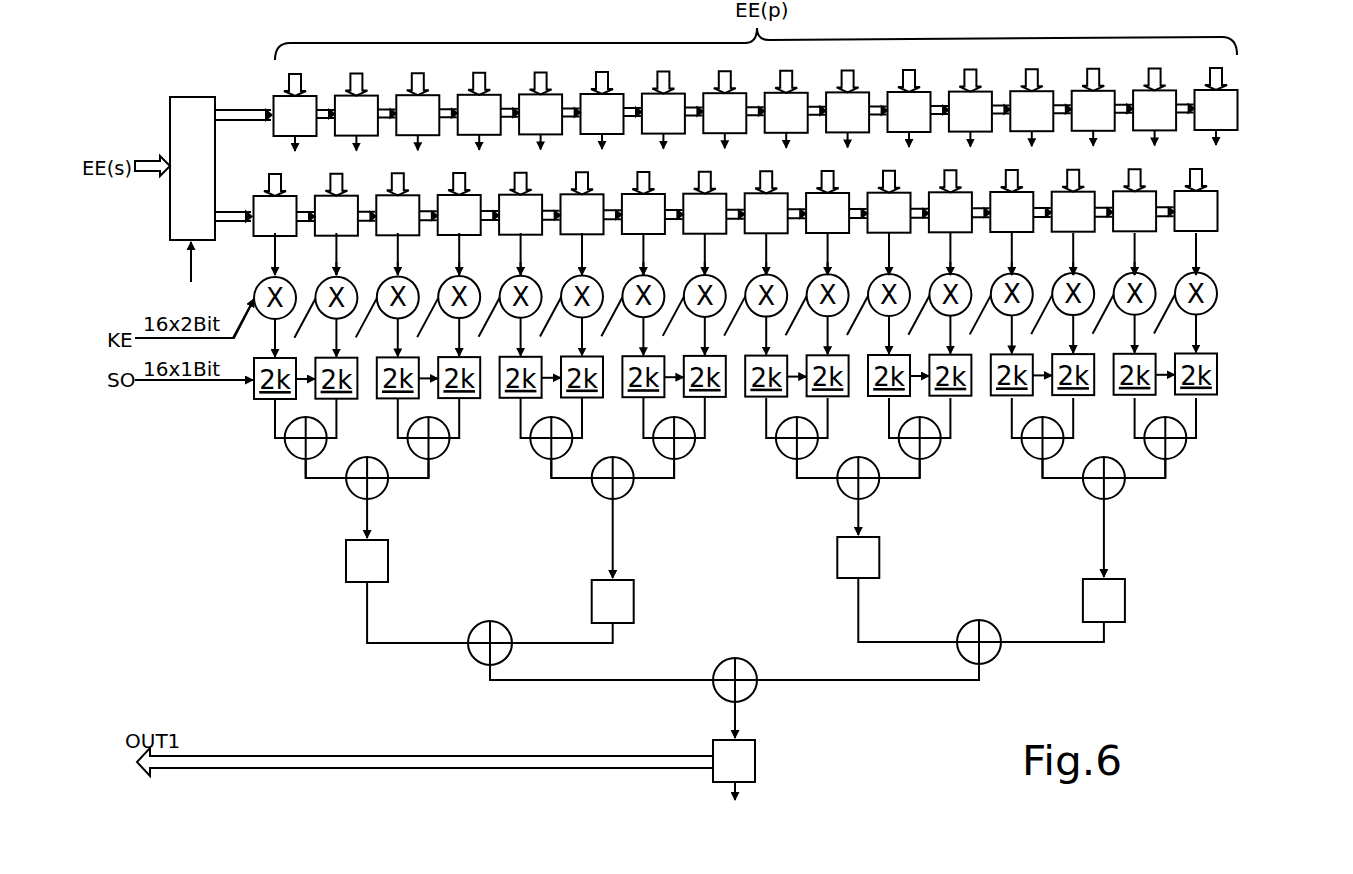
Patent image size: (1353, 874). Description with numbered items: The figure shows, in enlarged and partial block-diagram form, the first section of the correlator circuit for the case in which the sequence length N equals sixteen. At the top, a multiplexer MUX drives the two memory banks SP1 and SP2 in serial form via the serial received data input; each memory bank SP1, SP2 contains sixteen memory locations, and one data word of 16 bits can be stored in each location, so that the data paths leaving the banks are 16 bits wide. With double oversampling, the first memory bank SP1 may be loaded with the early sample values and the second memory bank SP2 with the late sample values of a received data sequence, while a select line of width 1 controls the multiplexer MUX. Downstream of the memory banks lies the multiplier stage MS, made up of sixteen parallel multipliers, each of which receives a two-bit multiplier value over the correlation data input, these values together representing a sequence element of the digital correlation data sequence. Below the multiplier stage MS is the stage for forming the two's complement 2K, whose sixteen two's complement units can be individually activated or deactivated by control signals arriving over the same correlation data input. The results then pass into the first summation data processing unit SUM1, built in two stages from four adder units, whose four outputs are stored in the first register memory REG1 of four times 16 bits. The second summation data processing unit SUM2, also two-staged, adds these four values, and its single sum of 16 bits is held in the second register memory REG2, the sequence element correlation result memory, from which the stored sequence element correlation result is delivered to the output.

The 16-bit data bus 16 is at (667, 470).
The 1-bit multiplexer select line 1 is at (183, 262).
The multiplexer MUX is at (212, 177).
The first memory bank SP1 is at (1244, 70).
The second memory bank SP2 is at (1244, 168).
The multiplier stage MS is at (1243, 248).
The stage for forming the two's complement 2K is at (1243, 328).
The first summation data processing unit SUM1 is at (1243, 408).
The first register memory REG1 is at (1145, 505).
The second summation data processing unit SUM2 is at (1145, 620).
The second register memory REG2 is at (755, 750).